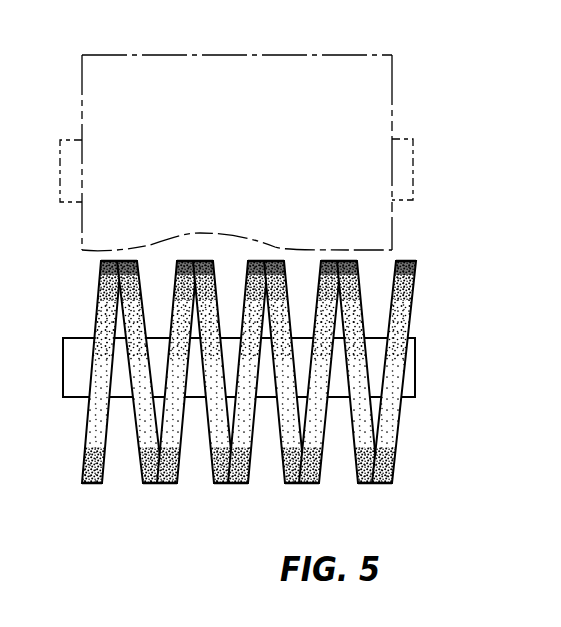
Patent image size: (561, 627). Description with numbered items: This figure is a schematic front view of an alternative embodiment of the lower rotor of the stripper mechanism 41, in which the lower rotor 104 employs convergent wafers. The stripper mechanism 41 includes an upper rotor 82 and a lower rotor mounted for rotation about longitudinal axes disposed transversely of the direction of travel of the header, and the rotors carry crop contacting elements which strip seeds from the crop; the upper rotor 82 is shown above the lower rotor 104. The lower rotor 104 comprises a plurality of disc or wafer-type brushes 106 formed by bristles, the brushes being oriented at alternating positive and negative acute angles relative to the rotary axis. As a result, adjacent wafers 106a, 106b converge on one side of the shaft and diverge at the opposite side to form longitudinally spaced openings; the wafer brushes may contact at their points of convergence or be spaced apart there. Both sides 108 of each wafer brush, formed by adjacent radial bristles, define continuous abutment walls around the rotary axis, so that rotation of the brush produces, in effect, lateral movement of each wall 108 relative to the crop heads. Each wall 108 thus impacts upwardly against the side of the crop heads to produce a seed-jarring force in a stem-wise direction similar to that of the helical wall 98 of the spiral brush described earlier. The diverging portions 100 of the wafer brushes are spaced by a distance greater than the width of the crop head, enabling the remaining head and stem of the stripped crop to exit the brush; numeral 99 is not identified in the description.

The upper rotor 82 is at (363, 108).
The stripper mechanism 41 is at (244, 418).
The diverging portions 100 is at (323, 430).
The lower rotor 104 is at (224, 393).
The wafer-type brushes 106 is at (82, 483).
The adjacent wafer 106a is at (152, 484).
The adjacent wafer 106b is at (165, 484).
The sides of wafer brush 108 is at (283, 465).
The reference numeral 99 is at (91, 617).
The helical wall 98 is at (13, 619).